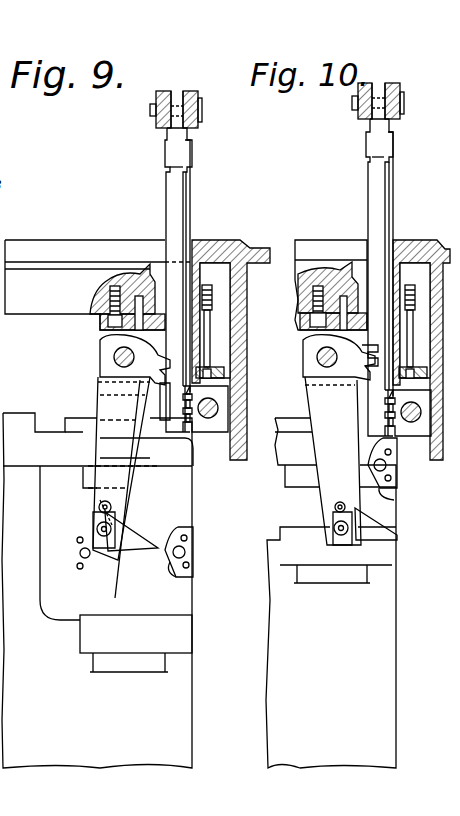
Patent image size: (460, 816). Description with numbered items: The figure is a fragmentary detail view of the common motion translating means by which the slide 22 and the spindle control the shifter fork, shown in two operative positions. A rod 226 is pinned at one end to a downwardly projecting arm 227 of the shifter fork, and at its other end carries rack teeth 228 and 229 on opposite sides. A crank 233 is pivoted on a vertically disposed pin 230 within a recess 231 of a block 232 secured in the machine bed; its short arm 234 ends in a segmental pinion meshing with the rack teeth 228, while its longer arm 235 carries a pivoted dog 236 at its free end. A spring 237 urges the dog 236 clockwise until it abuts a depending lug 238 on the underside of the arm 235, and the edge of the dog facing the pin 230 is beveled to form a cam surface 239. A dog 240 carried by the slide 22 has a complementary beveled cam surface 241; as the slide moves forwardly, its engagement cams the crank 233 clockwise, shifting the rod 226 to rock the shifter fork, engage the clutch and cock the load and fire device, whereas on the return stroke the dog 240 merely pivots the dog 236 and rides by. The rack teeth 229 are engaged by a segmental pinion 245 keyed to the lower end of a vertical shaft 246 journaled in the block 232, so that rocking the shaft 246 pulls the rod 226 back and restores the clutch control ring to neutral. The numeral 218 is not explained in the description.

In FIG. 9, the slide 22 is at (178, 695).
In FIG. 10, the slide 22 is at (370, 653).
In FIG. 10, the claw 218 is at (356, 354).
In FIG. 9, the rod 226 is at (165, 181).
In FIG. 10, the rod 226 is at (370, 202).
In FIG. 9, the arm 227 is at (200, 124).
In FIG. 10, the arm 227 is at (360, 118).
In FIG. 9, the rack teeth 228 is at (105, 347).
In FIG. 10, the rack teeth 228 is at (339, 357).
In FIG. 9, the rack teeth 229 is at (182, 440).
In FIG. 9, the pin 230 is at (115, 360).
In FIG. 10, the pin 230 is at (327, 368).
In FIG. 9, the recess 231 is at (184, 250).
In FIG. 10, the recess 231 is at (376, 250).
In FIG. 9, the block 232 is at (222, 310).
In FIG. 10, the block 232 is at (300, 275).
In FIG. 9, the crank 233 is at (108, 393).
In FIG. 10, the crank 233 is at (316, 405).
In FIG. 9, the short arm 234 is at (146, 452).
In FIG. 9, the longer arm 235 is at (116, 501).
In FIG. 9, the pivoted dog 236 is at (120, 493).
In FIG. 9, the spring 237 is at (98, 522).
In FIG. 10, the spring 237 is at (336, 527).
In FIG. 9, the depending lug 238 is at (96, 548).
In FIG. 10, the depending lug 238 is at (343, 548).
In FIG. 9, the cam surface 239 is at (148, 545).
In FIG. 10, the cam surface 239 is at (378, 518).
In FIG. 9, the dog 240 is at (190, 545).
In FIG. 10, the dog 240 is at (392, 462).
In FIG. 9, the complementary beveled cam surface 241 is at (188, 585).
In FIG. 10, the complementary beveled cam surface 241 is at (390, 498).
In FIG. 9, the segmental pinion 245 is at (229, 412).
In FIG. 10, the segmental pinion 245 is at (344, 409).
In FIG. 9, the shaft 246 is at (215, 398).
In FIG. 10, the shaft 246 is at (339, 383).